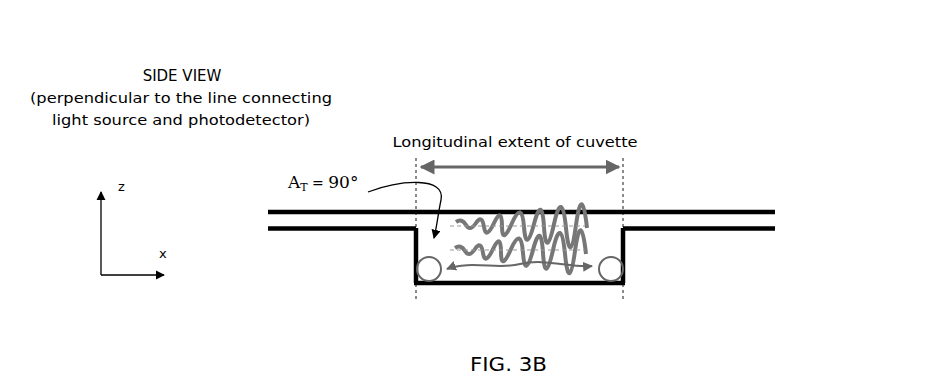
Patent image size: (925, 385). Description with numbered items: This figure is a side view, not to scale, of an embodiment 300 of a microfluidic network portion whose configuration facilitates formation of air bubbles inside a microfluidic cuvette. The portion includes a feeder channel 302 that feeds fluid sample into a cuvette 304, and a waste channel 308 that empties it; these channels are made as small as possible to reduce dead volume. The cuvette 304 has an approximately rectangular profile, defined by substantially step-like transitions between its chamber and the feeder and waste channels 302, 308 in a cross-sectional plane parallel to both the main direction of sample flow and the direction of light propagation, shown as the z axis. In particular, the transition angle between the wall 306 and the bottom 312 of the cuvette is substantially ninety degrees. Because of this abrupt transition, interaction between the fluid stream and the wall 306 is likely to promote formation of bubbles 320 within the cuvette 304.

The microfluidic network portion embodiment 300 is at (594, 86).
The feeder channel 302 is at (310, 214).
The cuvette 304 is at (607, 237).
The wall 306 is at (416, 247).
The waste channel 308 is at (713, 217).
The bottom 312 is at (543, 287).
The bubbles 320 is at (430, 272).